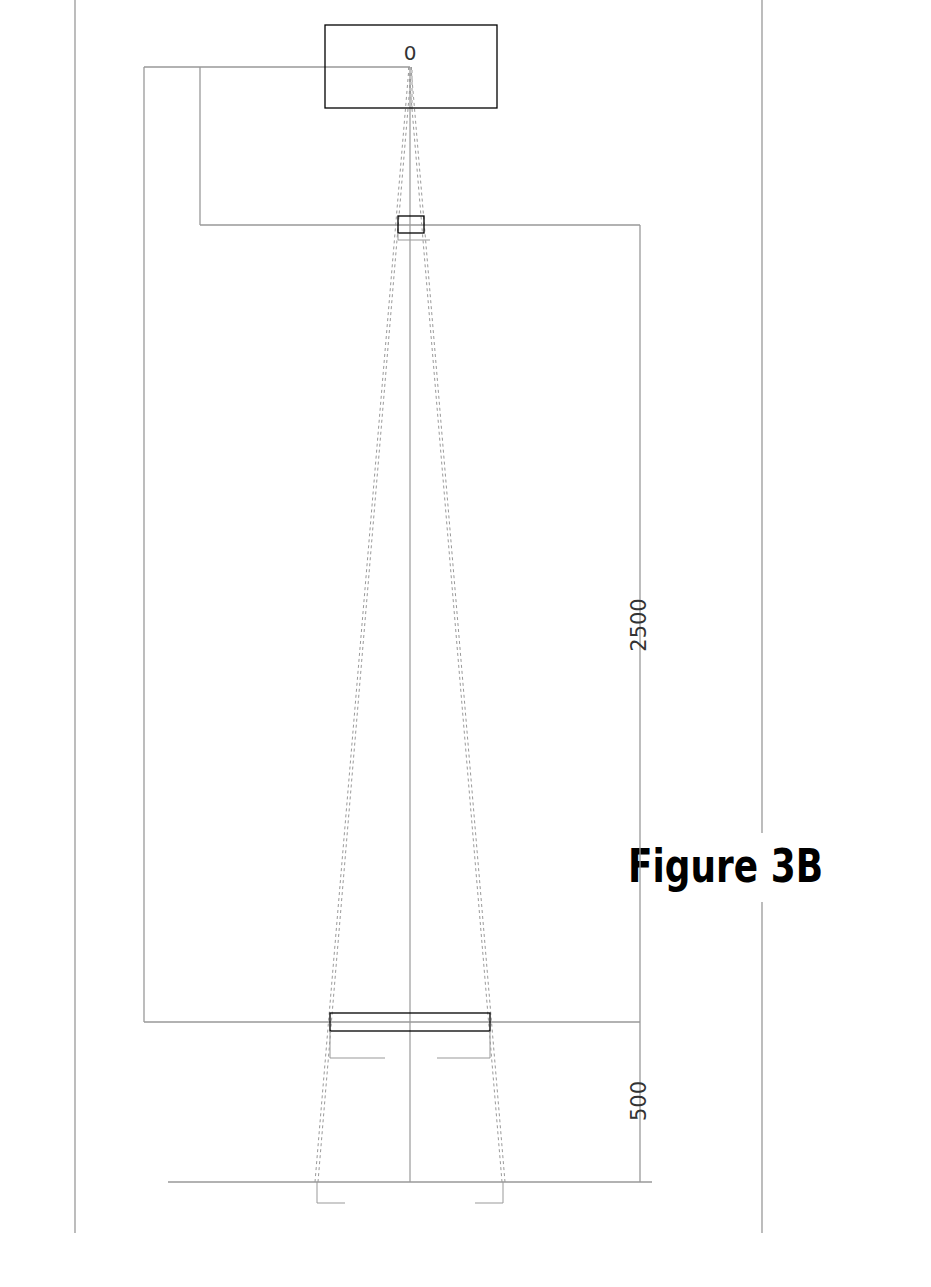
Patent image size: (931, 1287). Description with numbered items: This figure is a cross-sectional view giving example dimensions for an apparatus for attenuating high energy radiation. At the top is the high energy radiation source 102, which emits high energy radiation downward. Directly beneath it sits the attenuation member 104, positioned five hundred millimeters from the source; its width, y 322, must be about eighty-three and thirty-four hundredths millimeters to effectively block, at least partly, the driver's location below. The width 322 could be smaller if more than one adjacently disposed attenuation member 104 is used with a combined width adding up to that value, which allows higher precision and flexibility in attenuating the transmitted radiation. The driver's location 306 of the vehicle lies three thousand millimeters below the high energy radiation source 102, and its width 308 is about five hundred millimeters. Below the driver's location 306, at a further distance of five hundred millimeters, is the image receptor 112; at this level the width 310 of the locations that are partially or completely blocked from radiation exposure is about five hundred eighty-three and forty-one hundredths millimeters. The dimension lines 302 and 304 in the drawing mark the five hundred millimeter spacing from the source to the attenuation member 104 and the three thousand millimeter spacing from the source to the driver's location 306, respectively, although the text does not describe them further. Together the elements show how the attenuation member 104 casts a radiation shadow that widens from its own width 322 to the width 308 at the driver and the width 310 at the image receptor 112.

The high energy radiation source 102 is at (443, 107).
The attenuation member 104 is at (406, 226).
The image receptor 112 is at (480, 1180).
The source-to-aperture distance dimension 302 is at (198, 118).
The source-to-lens distance dimension 304 is at (144, 608).
The driver's location 306 is at (410, 1022).
The width of the driver's location 308 is at (352, 1058).
The width of the blocked locations 310 is at (342, 1202).
The width of the attenuation member 322 is at (413, 240).